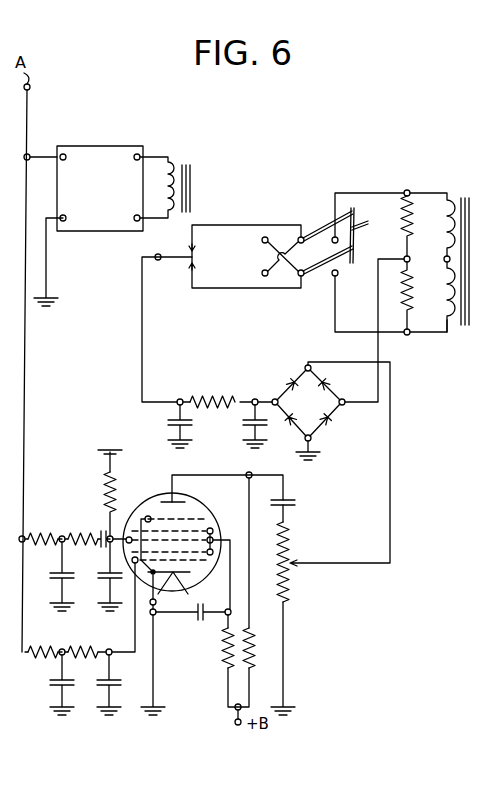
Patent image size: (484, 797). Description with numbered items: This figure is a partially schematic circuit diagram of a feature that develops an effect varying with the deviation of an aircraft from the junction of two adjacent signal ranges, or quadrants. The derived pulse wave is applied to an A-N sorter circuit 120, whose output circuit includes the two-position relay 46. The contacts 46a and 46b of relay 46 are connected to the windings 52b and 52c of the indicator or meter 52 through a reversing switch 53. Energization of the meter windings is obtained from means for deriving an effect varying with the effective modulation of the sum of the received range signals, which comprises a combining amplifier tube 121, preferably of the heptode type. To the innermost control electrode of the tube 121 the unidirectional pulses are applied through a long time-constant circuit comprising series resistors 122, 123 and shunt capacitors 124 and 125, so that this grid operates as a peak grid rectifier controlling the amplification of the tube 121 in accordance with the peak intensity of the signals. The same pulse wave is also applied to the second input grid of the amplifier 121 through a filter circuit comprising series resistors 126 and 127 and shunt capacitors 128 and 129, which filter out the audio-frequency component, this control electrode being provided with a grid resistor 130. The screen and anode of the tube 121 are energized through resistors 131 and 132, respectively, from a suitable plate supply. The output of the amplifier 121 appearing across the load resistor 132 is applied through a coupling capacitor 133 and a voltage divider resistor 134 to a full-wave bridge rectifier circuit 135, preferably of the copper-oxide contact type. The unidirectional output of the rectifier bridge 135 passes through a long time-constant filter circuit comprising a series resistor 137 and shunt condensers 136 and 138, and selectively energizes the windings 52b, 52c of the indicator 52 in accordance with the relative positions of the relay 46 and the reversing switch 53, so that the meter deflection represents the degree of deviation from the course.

The A-N sorter circuit 120 is at (116, 146).
The two-position relay 46 is at (177, 128).
The relay contact 46a is at (196, 252).
The relay contact 46b is at (196, 263).
The reversing switch 53 is at (315, 241).
The winding 52b is at (446, 198).
The indicator or meter 52 is at (444, 259).
The winding 52c is at (437, 315).
The series resistor 137 is at (228, 392).
The full-wave bridge rectifier circuit 135 is at (300, 395).
The shunt condenser 138 is at (170, 430).
The shunt condenser 136 is at (250, 430).
The grid resistor 130 is at (104, 480).
The combining amplifier tube 121 is at (172, 531).
The series resistor 126 is at (56, 531).
The series resistor 127 is at (100, 531).
The shunt capacitor 128 is at (58, 578).
The shunt capacitor 129 is at (106, 578).
The series resistor 122 is at (58, 645).
The series resistor 123 is at (105, 645).
The shunt capacitor 124 is at (58, 686).
The shunt capacitor 125 is at (106, 686).
The resistor 131 is at (222, 658).
The load resistor 132 is at (252, 663).
The coupling capacitor 133 is at (288, 506).
The voltage divider resistor 134 is at (288, 550).